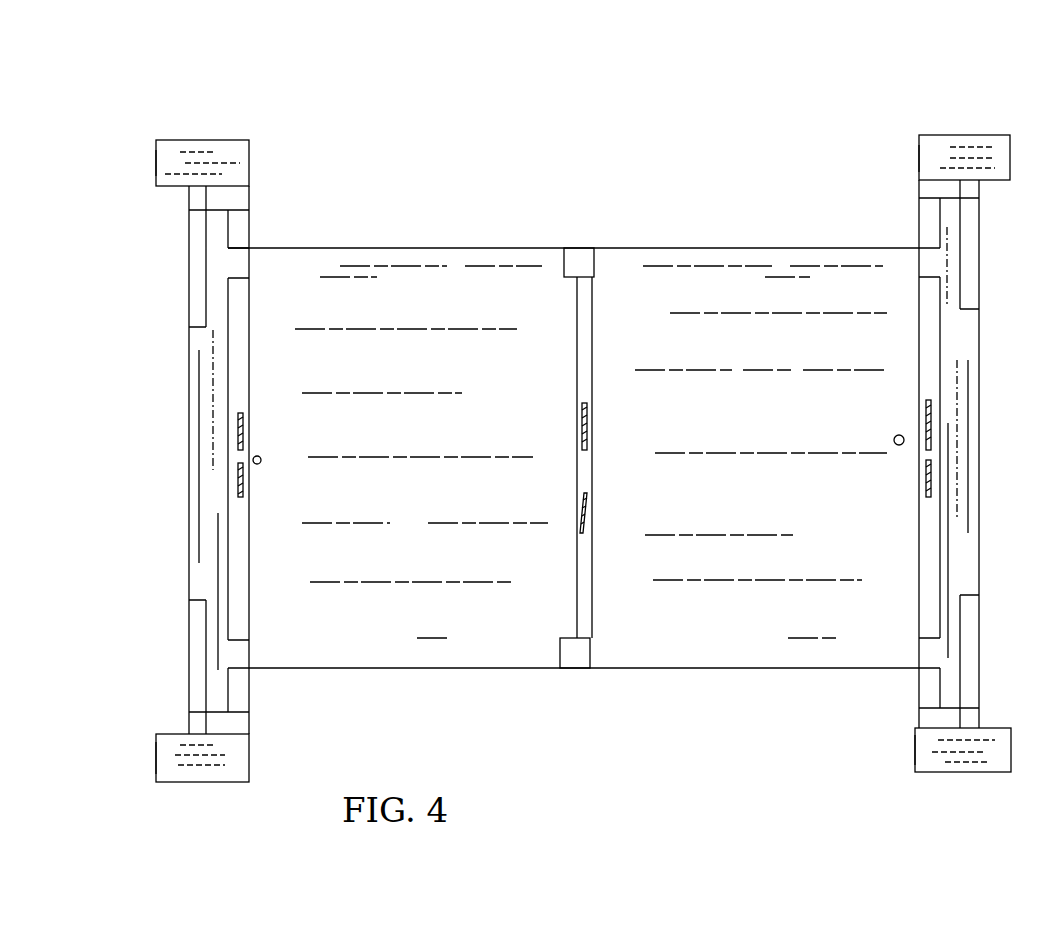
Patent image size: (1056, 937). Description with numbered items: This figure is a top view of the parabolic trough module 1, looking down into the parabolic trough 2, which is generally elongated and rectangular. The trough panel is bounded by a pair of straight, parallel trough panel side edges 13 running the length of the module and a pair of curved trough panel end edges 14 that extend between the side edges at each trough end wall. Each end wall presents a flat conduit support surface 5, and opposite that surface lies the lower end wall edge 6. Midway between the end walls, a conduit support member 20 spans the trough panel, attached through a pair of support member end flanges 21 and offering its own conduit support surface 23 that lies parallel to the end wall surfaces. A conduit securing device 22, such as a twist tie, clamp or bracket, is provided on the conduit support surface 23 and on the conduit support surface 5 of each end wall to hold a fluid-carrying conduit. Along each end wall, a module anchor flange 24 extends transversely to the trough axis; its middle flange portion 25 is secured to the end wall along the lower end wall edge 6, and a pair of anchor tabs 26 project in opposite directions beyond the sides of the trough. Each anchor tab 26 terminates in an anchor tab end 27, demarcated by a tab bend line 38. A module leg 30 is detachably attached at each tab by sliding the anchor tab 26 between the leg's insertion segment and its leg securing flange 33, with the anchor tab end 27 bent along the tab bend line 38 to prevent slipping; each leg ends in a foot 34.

The parabolic trough module 1 is at (226, 37).
The parabolic trough 2 is at (507, 244).
The conduit support surface 5 is at (238, 318).
The lower end wall edge 6 is at (756, 168).
The trough panel side edges 13 is at (640, 246).
The trough panel end edges 14 is at (250, 367).
The conduit support member 20 is at (577, 393).
The support member end flanges 21 is at (575, 263).
The conduit securing device 22 is at (246, 443).
The conduit support surface 23 is at (583, 356).
The module anchor flange 24 is at (185, 428).
The middle flange portion 25 is at (205, 458).
The anchor tabs 26 is at (220, 256).
The anchor tab end 27 is at (236, 199).
The module legs 30 is at (150, 157).
The leg securing flange 33 is at (232, 228).
The foot 34 is at (218, 150).
The tab bend line 38 is at (198, 196).